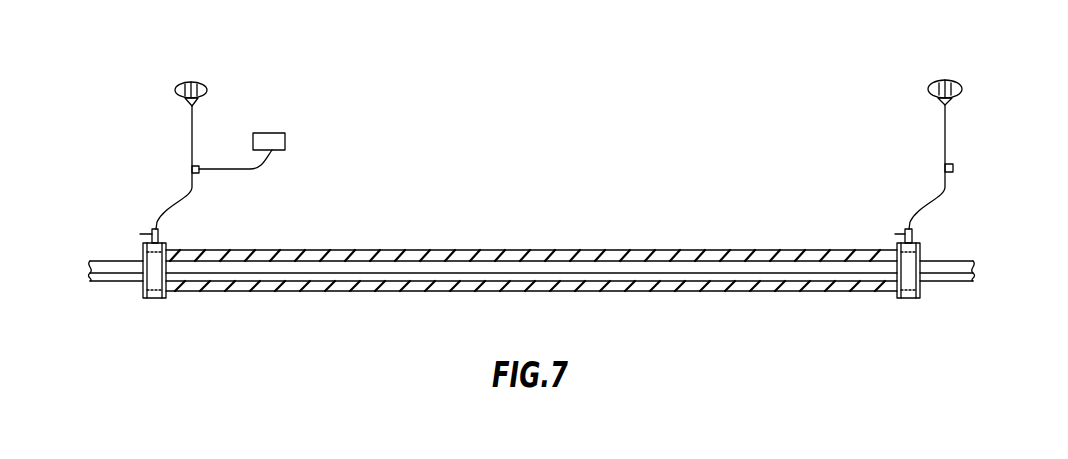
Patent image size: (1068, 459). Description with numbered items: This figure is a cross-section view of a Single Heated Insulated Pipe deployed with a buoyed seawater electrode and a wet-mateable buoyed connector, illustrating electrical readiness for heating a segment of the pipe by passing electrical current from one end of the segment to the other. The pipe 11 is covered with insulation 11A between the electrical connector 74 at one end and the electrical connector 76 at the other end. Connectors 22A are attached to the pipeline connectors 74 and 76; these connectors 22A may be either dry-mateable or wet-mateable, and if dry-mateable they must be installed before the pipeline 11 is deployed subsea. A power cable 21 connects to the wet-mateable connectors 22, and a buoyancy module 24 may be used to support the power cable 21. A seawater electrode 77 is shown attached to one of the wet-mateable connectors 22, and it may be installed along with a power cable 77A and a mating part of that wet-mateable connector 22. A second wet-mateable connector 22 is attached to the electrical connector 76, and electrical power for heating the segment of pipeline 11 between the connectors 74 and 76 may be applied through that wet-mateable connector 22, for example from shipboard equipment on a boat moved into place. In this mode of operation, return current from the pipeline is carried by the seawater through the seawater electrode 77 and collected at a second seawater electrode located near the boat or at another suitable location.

The pipe 11 is at (125, 272).
The insulation 11A is at (330, 291).
The power cable 21 is at (178, 202).
The wet-mateable connector 22 is at (192, 168).
The connector 22A is at (146, 234).
The buoyancy module 24 is at (207, 87).
The electrical connector 74 is at (158, 298).
The electrical connector 76 is at (912, 298).
The seawater electrode 77 is at (285, 142).
The power cable 77A is at (257, 169).